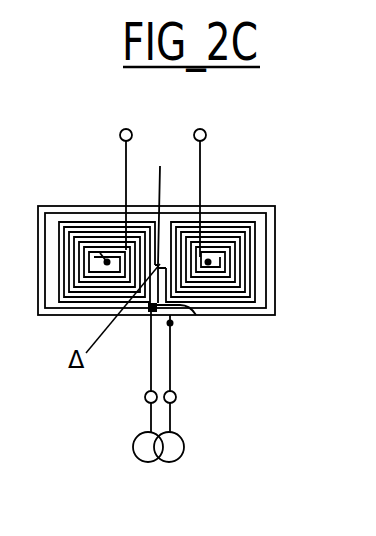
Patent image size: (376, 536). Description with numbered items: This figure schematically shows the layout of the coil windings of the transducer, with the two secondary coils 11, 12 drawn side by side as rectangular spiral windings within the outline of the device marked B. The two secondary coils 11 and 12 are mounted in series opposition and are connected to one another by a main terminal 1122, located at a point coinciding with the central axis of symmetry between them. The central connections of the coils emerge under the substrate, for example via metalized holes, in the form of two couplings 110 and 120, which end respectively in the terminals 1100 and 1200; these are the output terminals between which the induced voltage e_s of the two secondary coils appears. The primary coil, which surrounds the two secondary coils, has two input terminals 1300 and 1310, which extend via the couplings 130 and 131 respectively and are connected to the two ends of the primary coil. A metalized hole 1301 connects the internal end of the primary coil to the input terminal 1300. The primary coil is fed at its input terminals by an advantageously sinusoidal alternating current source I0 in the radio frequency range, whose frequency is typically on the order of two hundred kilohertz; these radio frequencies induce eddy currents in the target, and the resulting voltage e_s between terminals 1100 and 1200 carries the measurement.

The secondary coil 11 is at (240, 221).
The coupling 110 is at (212, 258).
The terminal 1100 is at (205, 131).
The secondary coil 12 is at (72, 225).
The coupling 120 is at (100, 253).
The terminal 1200 is at (122, 130).
The main terminal 1122 is at (164, 221).
The induced voltage es is at (163, 133).
The coupling 130 is at (151, 353).
The coupling 131 is at (172, 357).
The input terminal 1300 is at (146, 401).
The input terminal 1310 is at (176, 401).
The metalized hole 1301 is at (173, 323).
The chip card body B is at (285, 322).
The alternating current source I0 is at (134, 446).